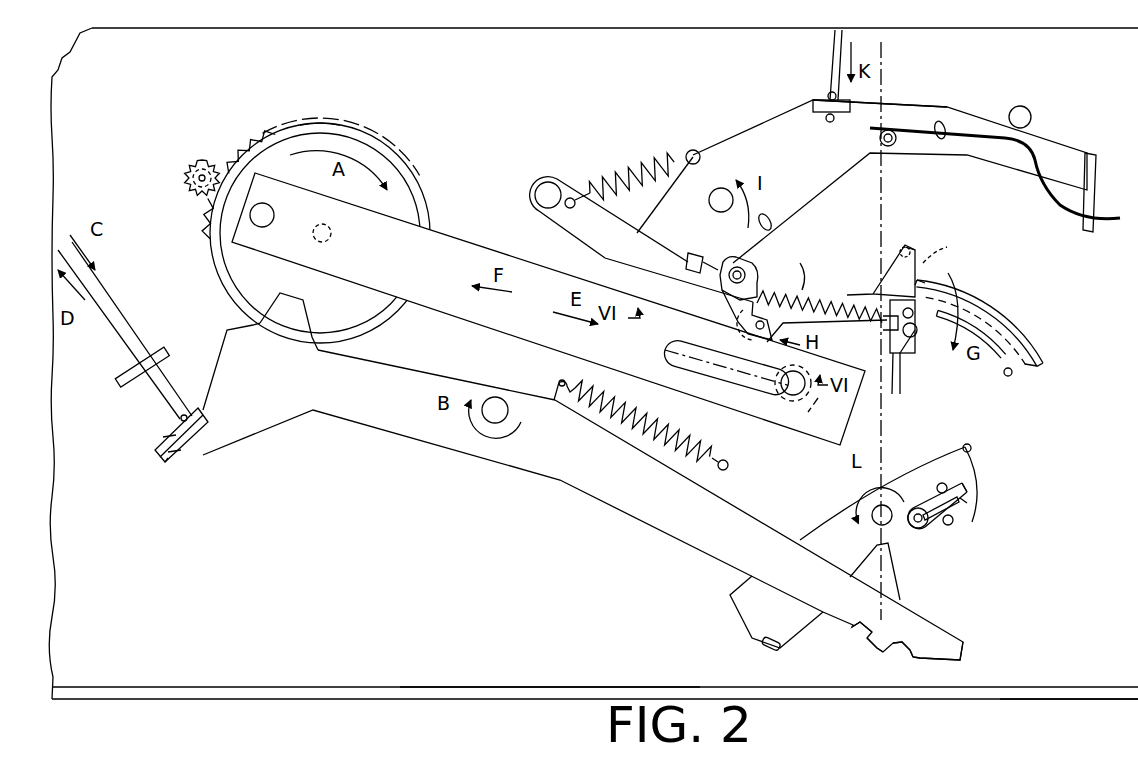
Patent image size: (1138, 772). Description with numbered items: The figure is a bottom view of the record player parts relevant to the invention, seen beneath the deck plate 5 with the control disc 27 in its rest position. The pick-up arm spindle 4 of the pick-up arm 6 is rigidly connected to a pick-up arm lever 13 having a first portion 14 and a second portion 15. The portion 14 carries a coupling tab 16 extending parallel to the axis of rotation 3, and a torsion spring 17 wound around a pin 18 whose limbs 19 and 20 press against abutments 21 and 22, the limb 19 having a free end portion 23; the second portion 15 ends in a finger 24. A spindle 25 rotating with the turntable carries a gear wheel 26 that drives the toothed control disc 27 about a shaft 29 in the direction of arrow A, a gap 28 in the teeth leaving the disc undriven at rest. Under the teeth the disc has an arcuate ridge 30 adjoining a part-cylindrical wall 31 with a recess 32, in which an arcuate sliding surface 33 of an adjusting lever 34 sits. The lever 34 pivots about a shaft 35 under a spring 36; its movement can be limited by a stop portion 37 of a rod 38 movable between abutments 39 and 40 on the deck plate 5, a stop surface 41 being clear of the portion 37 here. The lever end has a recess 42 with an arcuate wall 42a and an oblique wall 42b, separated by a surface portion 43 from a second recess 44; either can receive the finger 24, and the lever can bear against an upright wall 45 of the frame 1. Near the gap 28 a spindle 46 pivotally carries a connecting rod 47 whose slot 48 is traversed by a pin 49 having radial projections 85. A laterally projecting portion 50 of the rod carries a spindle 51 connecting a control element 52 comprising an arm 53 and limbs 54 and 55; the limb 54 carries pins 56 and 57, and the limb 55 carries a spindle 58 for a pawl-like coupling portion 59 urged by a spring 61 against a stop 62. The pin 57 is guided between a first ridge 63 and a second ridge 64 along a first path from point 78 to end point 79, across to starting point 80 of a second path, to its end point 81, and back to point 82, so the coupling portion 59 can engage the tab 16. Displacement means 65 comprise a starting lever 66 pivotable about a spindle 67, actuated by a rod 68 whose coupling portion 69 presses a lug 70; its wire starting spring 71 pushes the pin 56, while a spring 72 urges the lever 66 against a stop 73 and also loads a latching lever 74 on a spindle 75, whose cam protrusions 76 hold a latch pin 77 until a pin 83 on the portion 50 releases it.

The frame 1 is at (384, 703).
The axis of rotation 3 is at (188, 171).
The pick-up arm spindle 4 is at (868, 507).
The deck plate 5 is at (578, 688).
The pick-up arm 6 is at (884, 190).
The pick-up arm lever 13 is at (830, 540).
The first portion 14 is at (942, 477).
The second portion 15 is at (755, 602).
The coupling tab 16 is at (971, 449).
The torsion spring 17 is at (937, 528).
The pin 18 is at (915, 528).
The limb 19 is at (927, 502).
The limb 20 is at (950, 526).
The abutment 21 is at (943, 482).
The abutment 22 is at (953, 523).
The free end portion 23 is at (968, 488).
The finger 24 is at (765, 650).
The spindle 25 is at (193, 183).
The gear wheel 26 is at (205, 163).
The control disc 27 is at (322, 148).
The gap 28 is at (221, 170).
The shaft 29 is at (331, 239).
The arcuate ridge 30 is at (221, 266).
The part-cylindrical wall 31 is at (396, 156).
The recess 32 is at (290, 322).
The arcuate sliding surface 33 is at (280, 337).
The adjusting lever 34 is at (562, 464).
The shaft 35 is at (492, 418).
The spring 36 is at (632, 430).
The end portion 37 is at (180, 419).
The rod 38 is at (124, 318).
The abutment 39 is at (132, 375).
The abutment 40 is at (172, 438).
The stop surface 41 is at (168, 463).
The recess 42 is at (913, 640).
The wall 42a is at (915, 655).
The wall 42b is at (900, 648).
The surface portion 43 is at (870, 645).
The recess 44 is at (855, 635).
The upright wall 45 is at (1032, 700).
The spindle 46 is at (274, 215).
The connecting rod 47 is at (453, 260).
The slot 48 is at (712, 370).
The pin 49 is at (773, 396).
The laterally projecting portion 50 is at (712, 304).
The spindle 51 is at (757, 328).
The control element 52 is at (873, 290).
The arm 53 is at (843, 297).
The limb 54 is at (918, 265).
The limb 55 is at (893, 334).
The pin 56 is at (904, 246).
The pin 57 is at (935, 268).
The spindle 58 is at (912, 318).
The coupling portion 59 is at (908, 354).
The spring 61 is at (800, 268).
The stop 62 is at (893, 365).
The first ridge 63 is at (1023, 333).
The second ridge 64 is at (1000, 362).
The displacement means 65 is at (949, 100).
The starting lever 66 is at (765, 140).
The spindle 67 is at (722, 194).
The rod 68 is at (828, 48).
The coupling portion 69 is at (829, 93).
The lug 70 is at (818, 112).
The wire starting spring 71 is at (1040, 170).
The spring 72 is at (622, 180).
The stop 73 is at (1022, 105).
The latching lever 74 is at (580, 225).
The spindle 75 is at (546, 190).
The latching cam protrusions 76 is at (682, 260).
The latch pin 77 is at (696, 256).
The point 78 is at (917, 280).
The end point 79 is at (1031, 362).
The starting point 80 is at (1010, 376).
The end point 81 is at (963, 297).
The point 82 is at (947, 290).
The pin 83 is at (737, 266).
The radial projections 85 is at (795, 405).